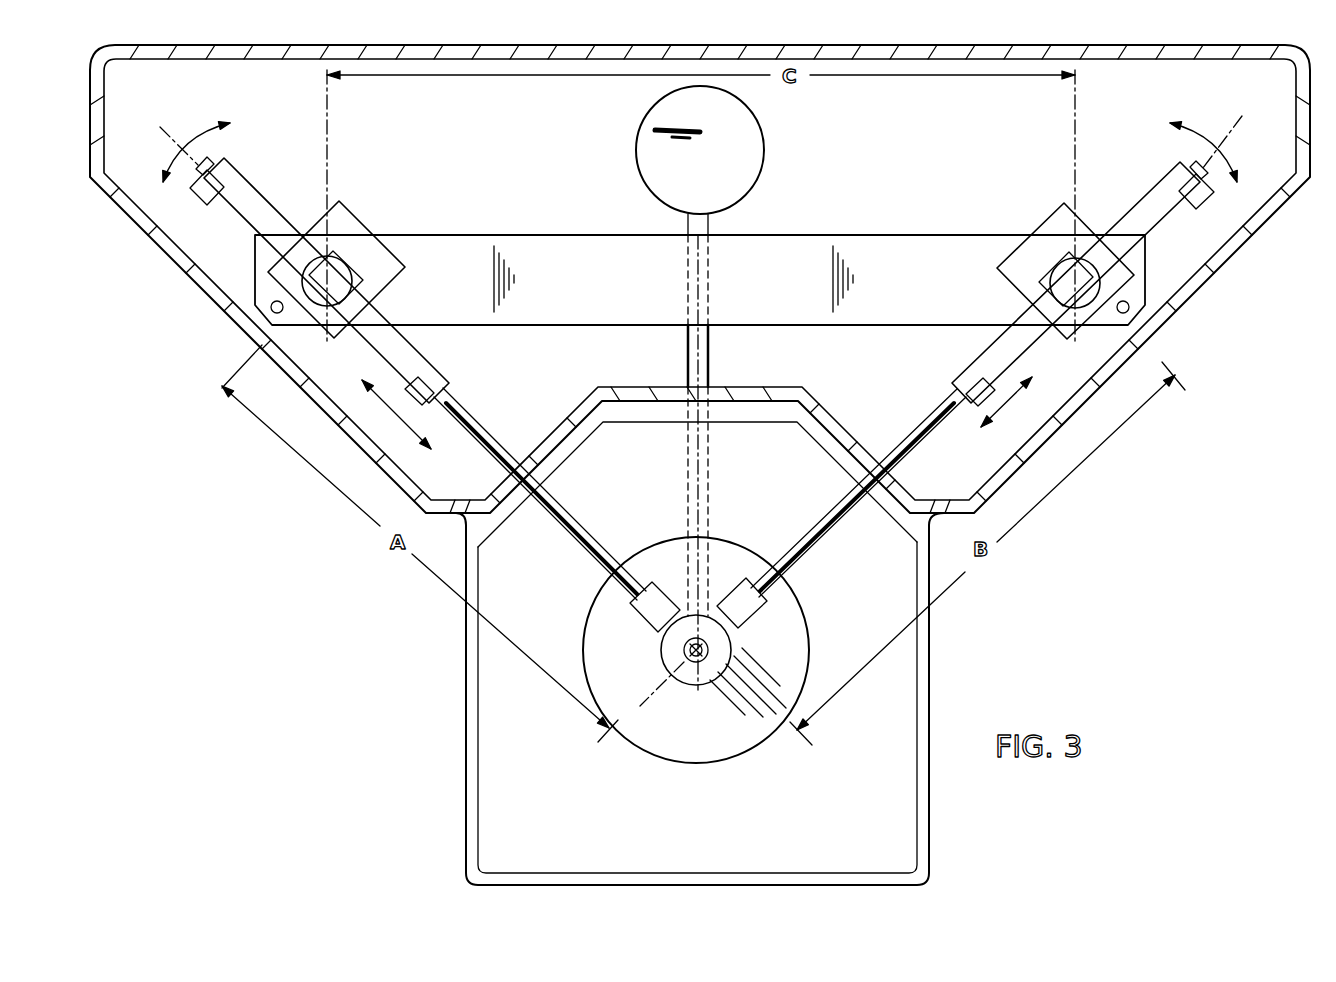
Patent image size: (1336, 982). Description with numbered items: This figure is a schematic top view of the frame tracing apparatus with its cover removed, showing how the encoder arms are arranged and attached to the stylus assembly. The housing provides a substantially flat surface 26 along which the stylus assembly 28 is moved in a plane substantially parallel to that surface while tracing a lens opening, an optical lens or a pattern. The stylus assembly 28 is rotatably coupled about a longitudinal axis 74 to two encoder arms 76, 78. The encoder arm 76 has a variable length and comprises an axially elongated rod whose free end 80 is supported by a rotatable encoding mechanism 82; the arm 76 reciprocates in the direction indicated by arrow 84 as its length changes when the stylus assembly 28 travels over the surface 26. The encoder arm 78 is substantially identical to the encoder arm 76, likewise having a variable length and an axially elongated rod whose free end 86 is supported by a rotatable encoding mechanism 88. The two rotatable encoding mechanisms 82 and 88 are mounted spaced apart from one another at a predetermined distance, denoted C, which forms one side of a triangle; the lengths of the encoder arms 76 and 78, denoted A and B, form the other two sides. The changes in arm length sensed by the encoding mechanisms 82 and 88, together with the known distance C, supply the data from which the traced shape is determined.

The flat surface 26 is at (870, 756).
The stylus assembly 28 is at (790, 585).
The longitudinal axis 74 is at (697, 668).
The encoder arm 76 is at (488, 420).
The encoder arm 78 is at (895, 437).
The free end 80 is at (228, 207).
The rotatable encoding mechanism 82 is at (402, 285).
The arrow 84 is at (391, 411).
The free end 86 is at (1168, 210).
The rotatable encoding mechanism 88 is at (1022, 287).